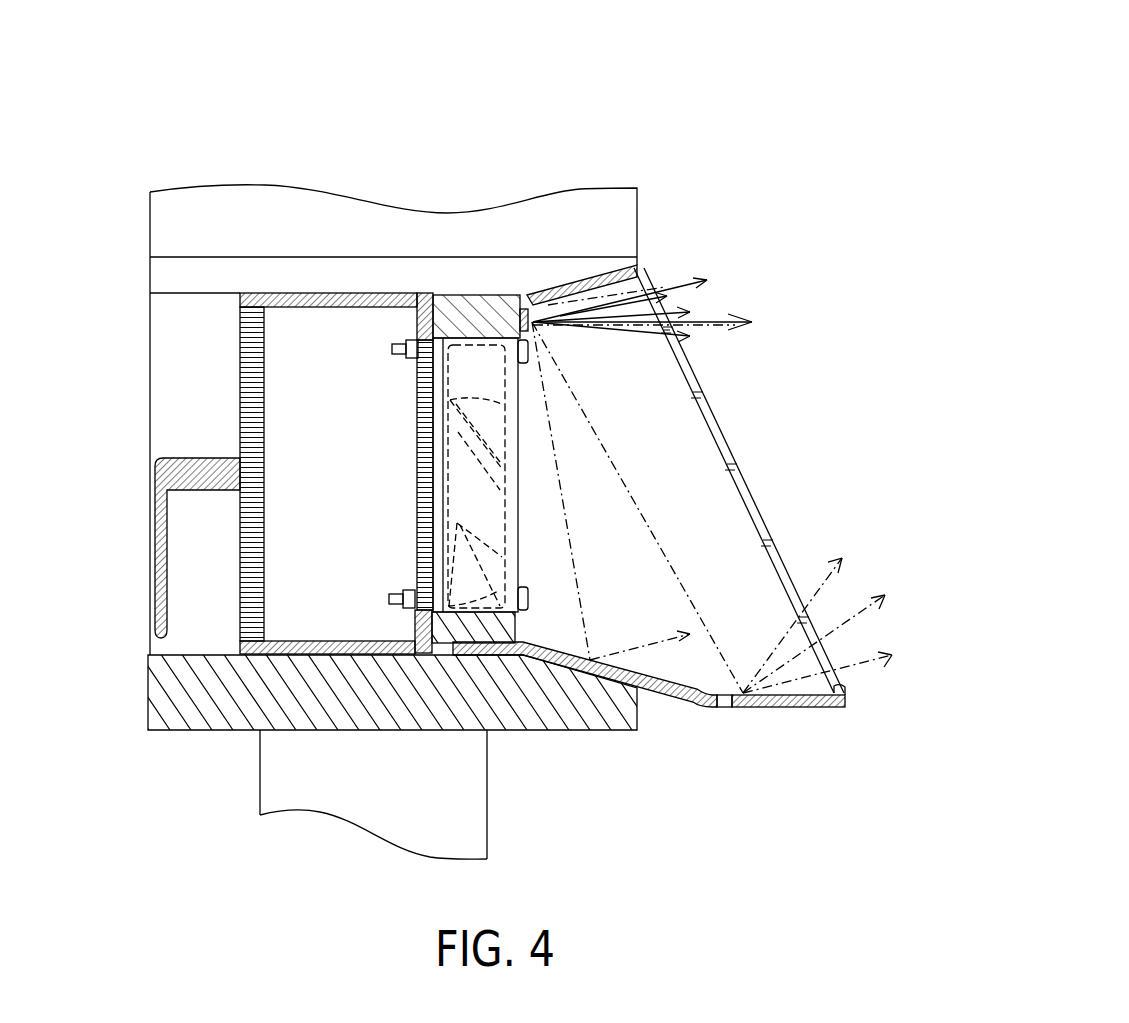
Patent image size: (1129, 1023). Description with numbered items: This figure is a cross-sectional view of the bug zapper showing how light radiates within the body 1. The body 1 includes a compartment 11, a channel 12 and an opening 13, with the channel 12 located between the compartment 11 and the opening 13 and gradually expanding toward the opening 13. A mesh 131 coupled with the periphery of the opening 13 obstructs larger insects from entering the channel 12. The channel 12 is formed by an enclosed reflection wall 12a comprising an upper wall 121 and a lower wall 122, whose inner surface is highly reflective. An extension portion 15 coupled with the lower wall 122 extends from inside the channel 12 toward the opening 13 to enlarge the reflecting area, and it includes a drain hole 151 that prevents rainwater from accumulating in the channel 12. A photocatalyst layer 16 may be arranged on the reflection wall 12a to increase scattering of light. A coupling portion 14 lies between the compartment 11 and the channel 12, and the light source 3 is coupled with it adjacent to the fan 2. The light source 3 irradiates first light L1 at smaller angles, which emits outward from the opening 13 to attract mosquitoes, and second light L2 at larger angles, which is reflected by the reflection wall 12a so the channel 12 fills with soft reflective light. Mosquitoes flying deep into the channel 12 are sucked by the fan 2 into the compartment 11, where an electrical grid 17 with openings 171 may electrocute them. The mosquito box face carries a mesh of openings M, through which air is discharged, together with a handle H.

The body 1 is at (653, 112).
The compartment 11 is at (337, 342).
The light source 3 is at (537, 293).
The upper wall 121 is at (603, 270).
The reflection wall 12a is at (646, 248).
The lower wall 122 is at (566, 665).
The first light L1 is at (720, 322).
The second light L2 is at (684, 283).
The openings 171 is at (417, 380).
The fan 2 is at (518, 383).
The mesh 131 is at (735, 466).
The opening 13 is at (736, 482).
The channel 12 is at (686, 533).
The handle H is at (153, 556).
The openings M is at (238, 629).
The photocatalyst layer 16 is at (843, 686).
The drain hole 151 is at (722, 708).
The extension portion 15 is at (812, 708).
The electrical grid 17 is at (415, 624).
The coupling portion 14 is at (450, 618).